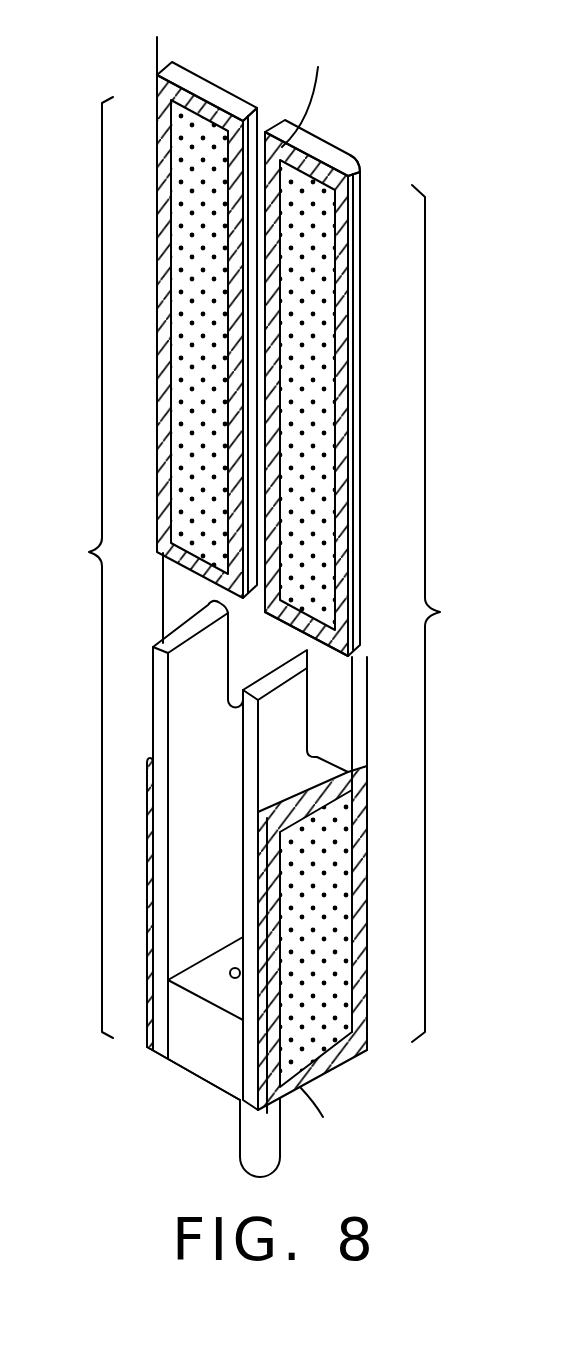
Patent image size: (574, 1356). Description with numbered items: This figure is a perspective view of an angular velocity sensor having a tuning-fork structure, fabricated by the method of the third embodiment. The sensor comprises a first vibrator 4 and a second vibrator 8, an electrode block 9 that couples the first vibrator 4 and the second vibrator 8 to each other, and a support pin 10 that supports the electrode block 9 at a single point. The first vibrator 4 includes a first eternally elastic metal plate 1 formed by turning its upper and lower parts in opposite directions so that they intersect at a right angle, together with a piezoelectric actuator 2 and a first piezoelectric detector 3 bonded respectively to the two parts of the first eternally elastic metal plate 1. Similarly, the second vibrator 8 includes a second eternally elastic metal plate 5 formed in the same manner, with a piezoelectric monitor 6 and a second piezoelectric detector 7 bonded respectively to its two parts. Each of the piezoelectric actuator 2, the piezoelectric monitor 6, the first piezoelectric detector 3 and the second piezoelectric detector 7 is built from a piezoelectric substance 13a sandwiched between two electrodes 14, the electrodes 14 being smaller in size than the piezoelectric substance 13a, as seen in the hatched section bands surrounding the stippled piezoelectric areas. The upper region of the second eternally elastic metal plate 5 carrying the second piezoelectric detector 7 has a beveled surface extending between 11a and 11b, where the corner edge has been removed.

The first eternally elastic metal plate 1 is at (157, 610).
The piezoelectric actuator 2 is at (145, 887).
The first piezoelectric detector 3 is at (188, 390).
The first vibrator 4 is at (85, 567).
The second eternally elastic metal plate 5 is at (342, 695).
The piezoelectric monitor 6 is at (340, 862).
The second piezoelectric detector 7 is at (327, 405).
The second vibrator 8 is at (440, 613).
The electrode block 9 is at (203, 1057).
The support pin 10 is at (240, 1145).
The end of beveled surface 11a is at (356, 163).
The end of beveled surface 11b is at (363, 650).
The piezoelectric substance 13a is at (256, 585).
The electrodes 14 is at (203, 125).